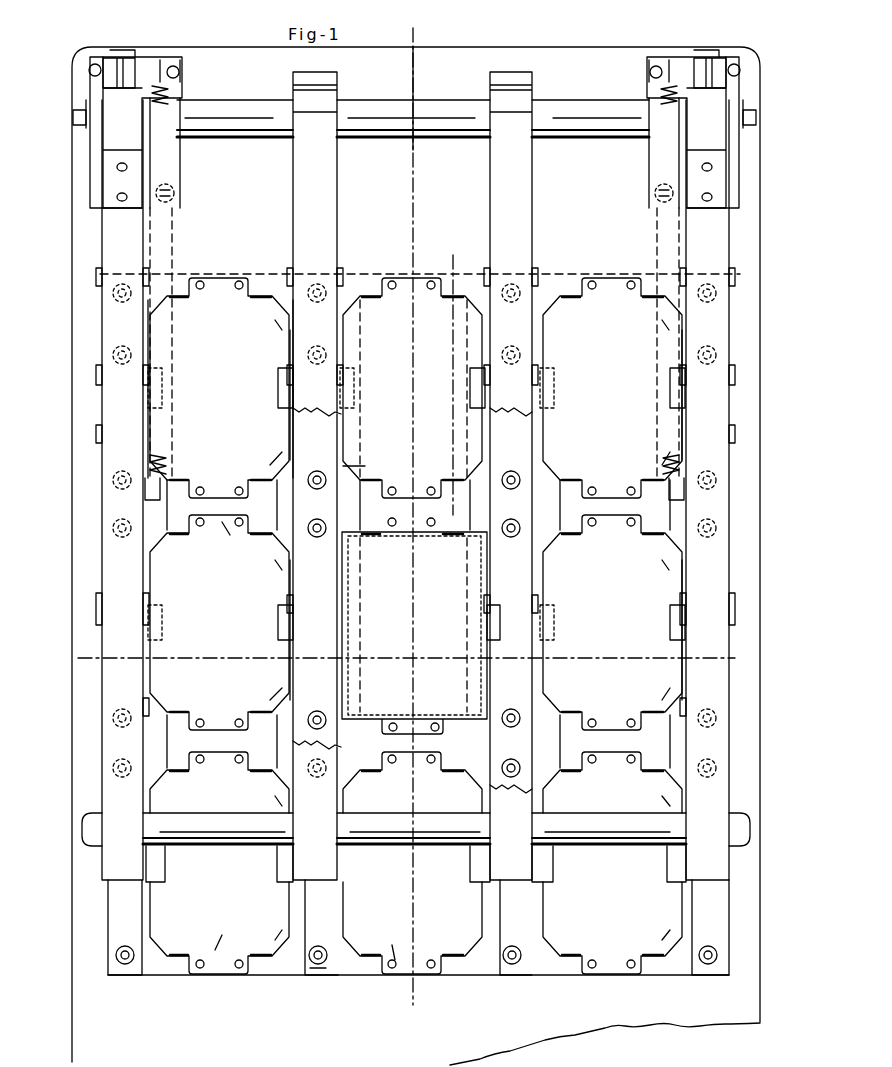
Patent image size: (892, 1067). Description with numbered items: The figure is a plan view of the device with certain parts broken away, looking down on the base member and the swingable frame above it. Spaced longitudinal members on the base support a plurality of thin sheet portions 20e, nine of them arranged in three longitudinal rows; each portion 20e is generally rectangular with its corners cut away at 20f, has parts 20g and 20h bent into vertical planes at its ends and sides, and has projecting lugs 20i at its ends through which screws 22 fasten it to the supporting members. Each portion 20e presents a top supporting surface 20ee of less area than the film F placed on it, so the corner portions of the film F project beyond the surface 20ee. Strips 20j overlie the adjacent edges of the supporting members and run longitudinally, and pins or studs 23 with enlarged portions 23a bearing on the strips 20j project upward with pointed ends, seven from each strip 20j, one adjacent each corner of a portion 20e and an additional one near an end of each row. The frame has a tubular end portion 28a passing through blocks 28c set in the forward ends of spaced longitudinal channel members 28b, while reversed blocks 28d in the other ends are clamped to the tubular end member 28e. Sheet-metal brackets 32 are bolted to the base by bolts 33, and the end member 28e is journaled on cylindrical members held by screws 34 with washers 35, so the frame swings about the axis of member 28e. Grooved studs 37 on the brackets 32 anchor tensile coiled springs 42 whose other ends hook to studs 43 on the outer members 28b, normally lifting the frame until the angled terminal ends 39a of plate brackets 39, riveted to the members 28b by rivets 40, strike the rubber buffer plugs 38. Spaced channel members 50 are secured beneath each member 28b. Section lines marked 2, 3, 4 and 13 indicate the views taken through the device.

The section line 2- 2 is at (430, 35).
The section line 3- 3 is at (55, 112).
The section line 4- 4 is at (92, 648).
The section line 13- 13 is at (436, 262).
The portion 20e is at (575, 325).
The top supporting surface 20ee is at (215, 325).
The cut-away corner 20f is at (280, 485).
The end part 20g is at (255, 482).
The side part 20h is at (290, 418).
The projecting lug 20i is at (395, 280).
The strip 20j is at (340, 450).
The screw 22 is at (222, 524).
The pin or stud 23 is at (325, 530).
The enlarged portion 23a is at (340, 470).
The end portion 28a is at (245, 818).
The longitudinally extending portion 28b is at (295, 190).
The block 28c is at (108, 880).
The block 28d is at (337, 95).
The end member 28e is at (445, 105).
The bracket 32 is at (92, 178).
The bolt 33 is at (155, 196).
The screw 34 is at (78, 125).
The washer 35 is at (86, 110).
The grooved stud 37 is at (178, 72).
The buffer plug 38 is at (100, 68).
The plate bracket 39 is at (115, 152).
The terminal end 39a is at (132, 90).
The rivet 40 is at (120, 200).
The tensile coiled spring 42 is at (172, 95).
The stud 43 is at (143, 498).
The member 50 is at (100, 375).
The film F is at (345, 775).